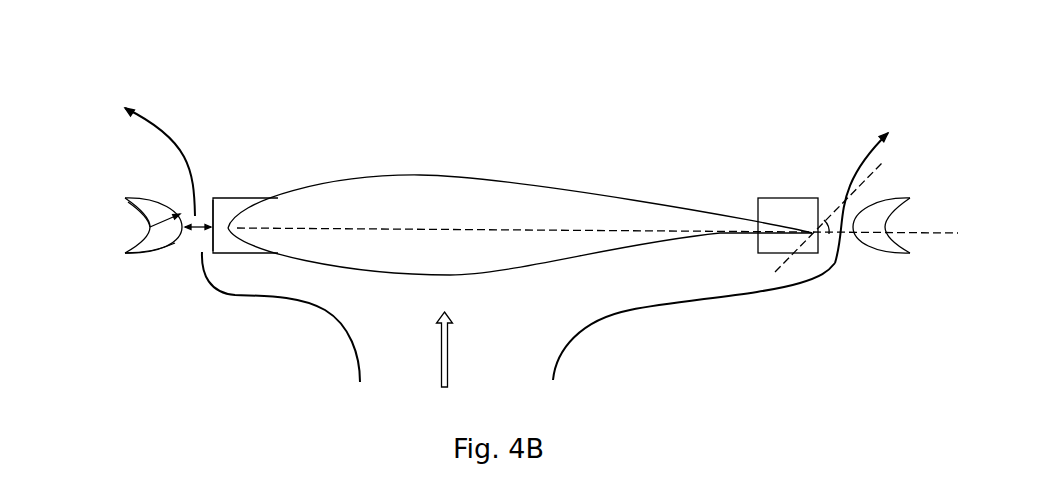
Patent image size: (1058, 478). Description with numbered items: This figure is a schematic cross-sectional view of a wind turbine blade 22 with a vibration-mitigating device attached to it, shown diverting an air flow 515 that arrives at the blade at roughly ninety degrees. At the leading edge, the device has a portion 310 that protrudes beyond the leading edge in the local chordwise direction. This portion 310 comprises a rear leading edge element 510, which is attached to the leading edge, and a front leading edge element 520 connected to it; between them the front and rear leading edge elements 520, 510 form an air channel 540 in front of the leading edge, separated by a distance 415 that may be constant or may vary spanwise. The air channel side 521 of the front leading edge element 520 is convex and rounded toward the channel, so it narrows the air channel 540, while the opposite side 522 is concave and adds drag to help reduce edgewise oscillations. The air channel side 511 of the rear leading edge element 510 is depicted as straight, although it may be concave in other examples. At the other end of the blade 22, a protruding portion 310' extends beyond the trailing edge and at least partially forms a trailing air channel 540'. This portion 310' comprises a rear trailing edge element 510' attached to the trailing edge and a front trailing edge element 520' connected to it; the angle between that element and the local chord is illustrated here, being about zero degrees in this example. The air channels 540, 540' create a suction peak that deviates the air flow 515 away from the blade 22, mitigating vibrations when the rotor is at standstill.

The wind turbine blade 22 is at (507, 261).
The portion configured to protrude beyond the leading edge 310 is at (211, 184).
The protruding portion configured to protrude beyond the trailing edge 310' is at (801, 235).
The distance between the front leading edge element and the rear leading edge elemen 415 is at (196, 232).
The rear leading edge element 510 is at (255, 178).
The rear trailing edge element 510' is at (804, 185).
The air channel side of the rear leading edge element 511 is at (208, 256).
The air flow 515 is at (449, 357).
The front leading edge element 520 is at (116, 215).
The front trailing edge element 520' is at (902, 174).
The air channel side of the front leading edge element 521 is at (182, 249).
The side of the front leading edge element opposite to the air channel side 522 is at (137, 217).
The air channel 540 is at (186, 162).
The air channel 540' is at (866, 251).